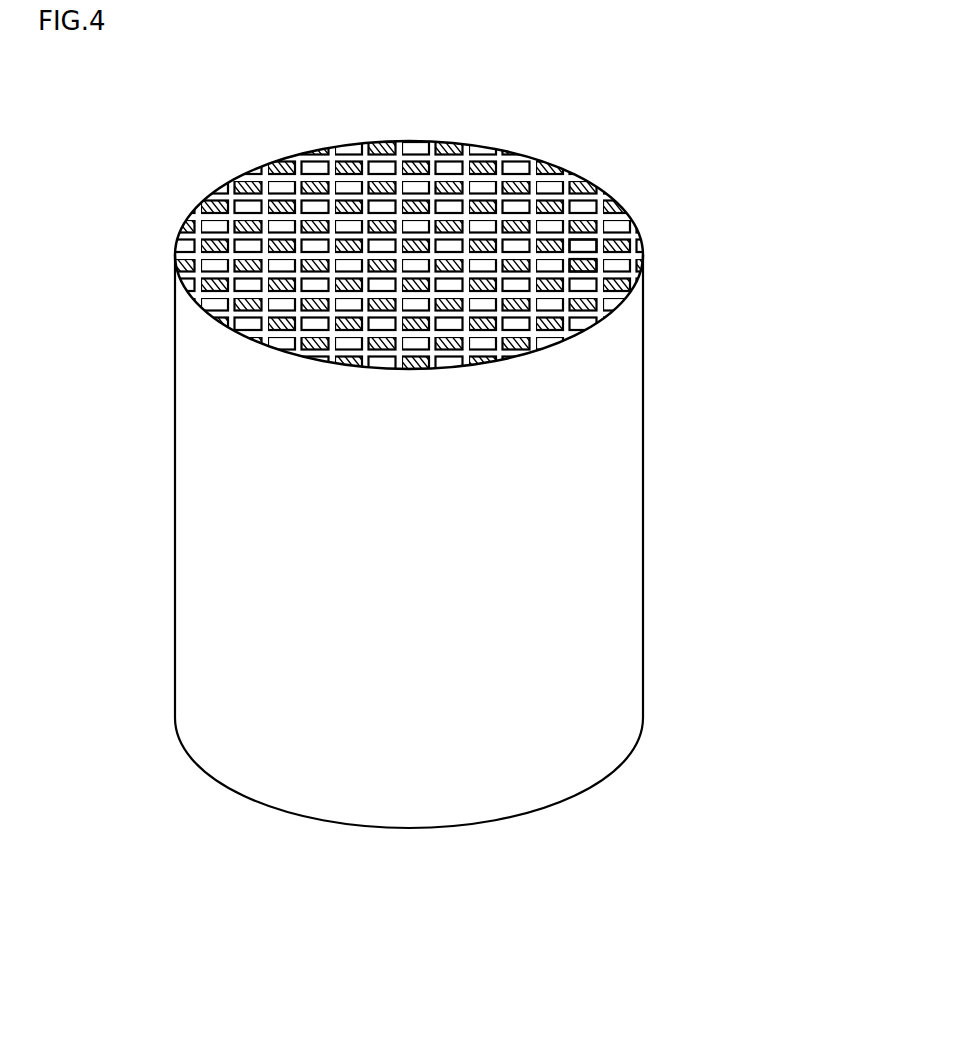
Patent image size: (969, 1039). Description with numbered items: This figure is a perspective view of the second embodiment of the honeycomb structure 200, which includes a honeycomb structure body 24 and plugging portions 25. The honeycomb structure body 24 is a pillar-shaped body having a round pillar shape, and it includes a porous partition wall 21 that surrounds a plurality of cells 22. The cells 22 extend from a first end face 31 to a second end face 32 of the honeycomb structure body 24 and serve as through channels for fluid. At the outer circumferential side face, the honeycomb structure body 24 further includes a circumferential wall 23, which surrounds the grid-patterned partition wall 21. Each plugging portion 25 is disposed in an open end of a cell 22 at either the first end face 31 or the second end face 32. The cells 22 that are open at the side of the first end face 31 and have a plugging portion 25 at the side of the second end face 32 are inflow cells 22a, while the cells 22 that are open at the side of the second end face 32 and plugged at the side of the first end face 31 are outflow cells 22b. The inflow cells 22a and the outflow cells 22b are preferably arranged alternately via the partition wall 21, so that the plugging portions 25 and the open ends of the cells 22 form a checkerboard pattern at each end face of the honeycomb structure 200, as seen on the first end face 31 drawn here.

The honeycomb structure 200 is at (806, 78).
The partition wall 21 is at (533, 215).
The cells 22 is at (409, 255).
The inflow cells 22a is at (597, 258).
The outflow cells 22b is at (585, 243).
The circumferential wall 23 is at (607, 411).
The honeycomb structure body 24 is at (655, 302).
The plugging portion 25 is at (500, 195).
The first end face 31 is at (262, 161).
The second end face 32 is at (199, 794).